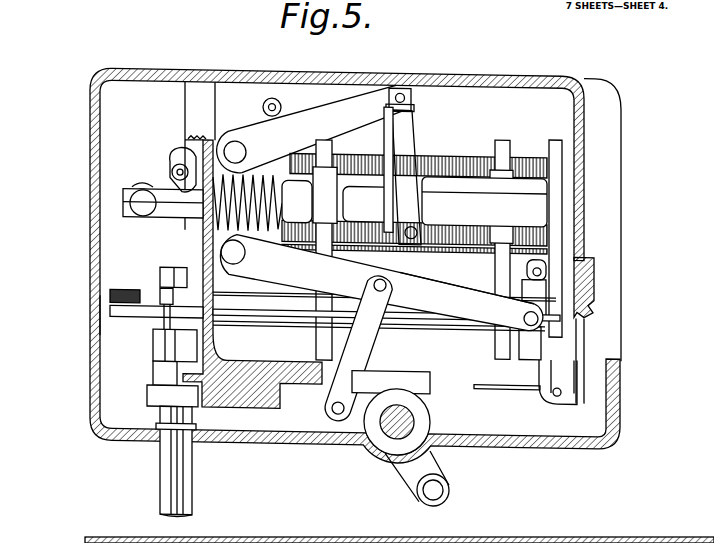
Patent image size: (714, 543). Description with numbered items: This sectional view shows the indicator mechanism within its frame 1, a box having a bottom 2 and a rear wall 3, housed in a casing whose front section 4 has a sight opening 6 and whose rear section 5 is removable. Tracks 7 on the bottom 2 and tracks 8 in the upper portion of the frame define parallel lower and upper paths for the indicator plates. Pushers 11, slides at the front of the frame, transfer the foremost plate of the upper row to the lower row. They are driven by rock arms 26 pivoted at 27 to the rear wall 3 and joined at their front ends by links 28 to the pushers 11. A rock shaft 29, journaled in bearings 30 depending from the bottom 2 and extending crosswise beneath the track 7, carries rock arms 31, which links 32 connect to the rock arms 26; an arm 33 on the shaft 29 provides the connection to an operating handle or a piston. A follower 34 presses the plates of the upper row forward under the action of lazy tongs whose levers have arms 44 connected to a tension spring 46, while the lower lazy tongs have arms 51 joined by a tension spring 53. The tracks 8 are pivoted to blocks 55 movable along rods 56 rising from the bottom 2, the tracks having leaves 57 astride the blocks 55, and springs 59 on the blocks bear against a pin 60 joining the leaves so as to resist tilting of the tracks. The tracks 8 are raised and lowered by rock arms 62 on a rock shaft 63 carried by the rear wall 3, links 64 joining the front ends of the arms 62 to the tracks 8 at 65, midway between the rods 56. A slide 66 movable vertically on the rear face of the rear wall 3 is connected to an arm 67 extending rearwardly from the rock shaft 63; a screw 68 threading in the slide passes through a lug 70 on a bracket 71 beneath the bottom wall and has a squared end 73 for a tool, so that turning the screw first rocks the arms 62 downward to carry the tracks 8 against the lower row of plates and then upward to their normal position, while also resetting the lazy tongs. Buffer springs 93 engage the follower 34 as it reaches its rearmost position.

The frame 1 is at (200, 348).
The bottom 2 is at (499, 370).
The rear wall 3 is at (80, 80).
The front section 4 is at (492, 442).
The rear section 5 is at (88, 315).
The sight opening 6 is at (592, 281).
The tracks 7 is at (445, 349).
The tracks 8 is at (383, 242).
The pushers 11 is at (547, 262).
The rock arms 26 is at (423, 291).
The pivot 27 is at (245, 256).
The links 28 is at (511, 275).
The rock shaft 29 is at (383, 431).
The bearings 30 is at (410, 380).
The rock arms 31 is at (340, 421).
The links 32 is at (368, 330).
The arm 33 is at (440, 494).
The follower 34 is at (288, 162).
The arm 44 is at (133, 204).
The tension spring 46 is at (125, 186).
The arm 51 is at (110, 306).
The tension spring 53 is at (117, 284).
The blocks 55 is at (312, 144).
The rods 56 is at (318, 328).
The leaves 57 is at (495, 213).
The springs 59 is at (505, 205).
The pin 60 is at (343, 188).
The rock arms 62 is at (323, 113).
The rock shaft 63 is at (213, 140).
The links 64 is at (395, 132).
The connection point 65 is at (405, 248).
The slide 66 is at (172, 180).
The arm 67 is at (173, 151).
The screw 68 is at (323, 206).
The lug 70 is at (157, 392).
The bracket 71 is at (203, 409).
The squared end 73 is at (163, 494).
The buffer springs 93 is at (381, 282).